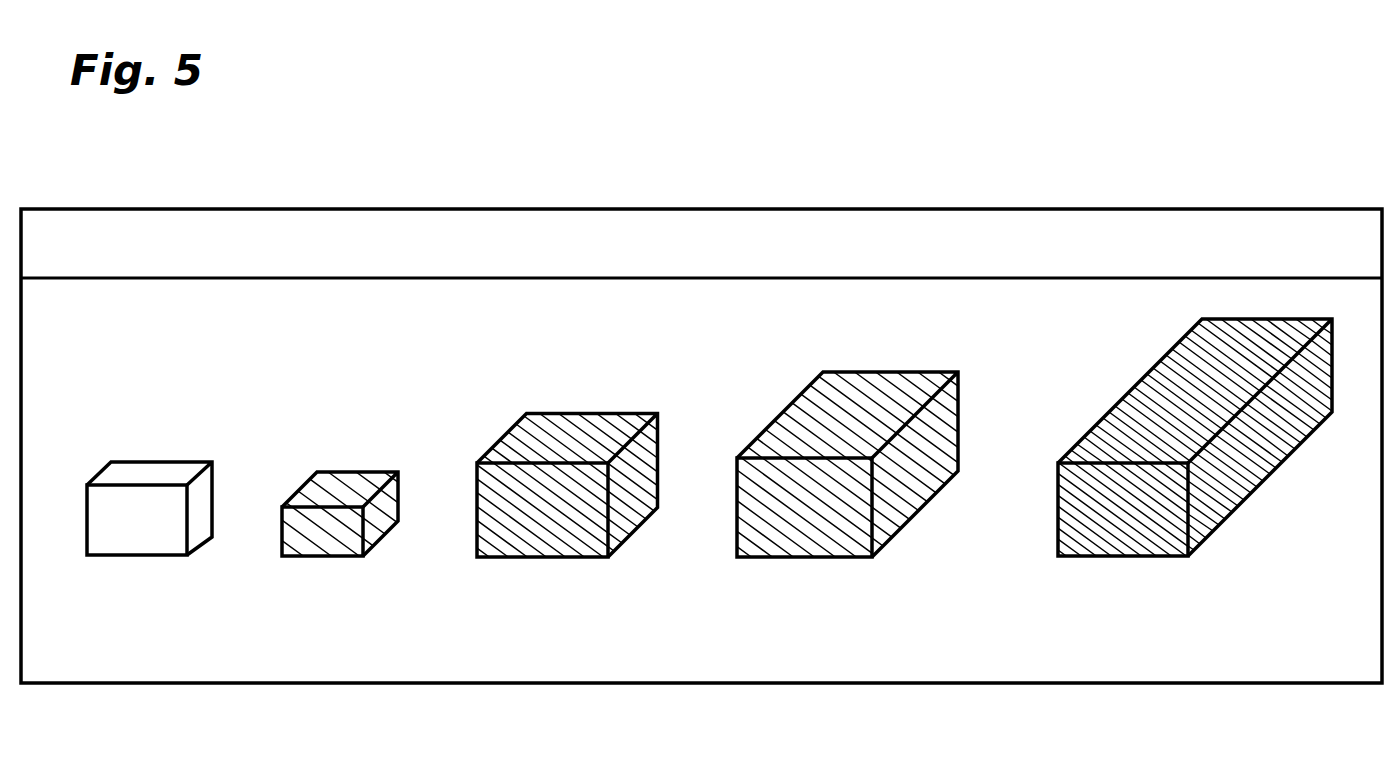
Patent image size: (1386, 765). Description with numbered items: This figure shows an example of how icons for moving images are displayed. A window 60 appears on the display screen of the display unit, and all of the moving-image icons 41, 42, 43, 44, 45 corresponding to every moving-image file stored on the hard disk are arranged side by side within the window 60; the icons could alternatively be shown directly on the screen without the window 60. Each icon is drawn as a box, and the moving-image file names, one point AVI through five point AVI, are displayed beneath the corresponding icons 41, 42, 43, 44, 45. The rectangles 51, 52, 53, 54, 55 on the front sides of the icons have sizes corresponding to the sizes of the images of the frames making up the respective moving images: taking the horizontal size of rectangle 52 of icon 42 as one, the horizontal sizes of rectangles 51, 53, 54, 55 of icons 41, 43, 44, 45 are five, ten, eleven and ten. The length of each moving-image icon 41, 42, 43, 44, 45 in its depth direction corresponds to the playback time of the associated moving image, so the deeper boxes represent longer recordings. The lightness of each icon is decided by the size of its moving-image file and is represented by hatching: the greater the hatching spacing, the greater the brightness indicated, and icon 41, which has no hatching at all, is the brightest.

The window 60 is at (912, 208).
The moving-image icon 41 is at (186, 442).
The moving-image icon 42 is at (378, 450).
The moving-image icon 43 is at (610, 400).
The moving-image icon 44 is at (952, 352).
The moving-image icon 45 is at (1132, 364).
The rectangle 51 is at (100, 515).
The rectangle 52 is at (293, 523).
The rectangle 53 is at (497, 515).
The rectangle 54 is at (758, 508).
The rectangle 55 is at (1082, 515).